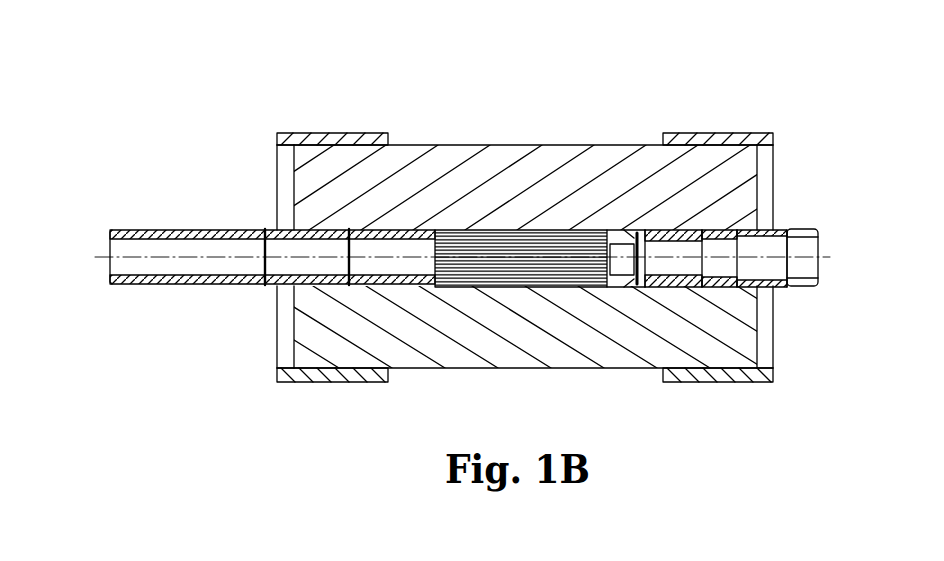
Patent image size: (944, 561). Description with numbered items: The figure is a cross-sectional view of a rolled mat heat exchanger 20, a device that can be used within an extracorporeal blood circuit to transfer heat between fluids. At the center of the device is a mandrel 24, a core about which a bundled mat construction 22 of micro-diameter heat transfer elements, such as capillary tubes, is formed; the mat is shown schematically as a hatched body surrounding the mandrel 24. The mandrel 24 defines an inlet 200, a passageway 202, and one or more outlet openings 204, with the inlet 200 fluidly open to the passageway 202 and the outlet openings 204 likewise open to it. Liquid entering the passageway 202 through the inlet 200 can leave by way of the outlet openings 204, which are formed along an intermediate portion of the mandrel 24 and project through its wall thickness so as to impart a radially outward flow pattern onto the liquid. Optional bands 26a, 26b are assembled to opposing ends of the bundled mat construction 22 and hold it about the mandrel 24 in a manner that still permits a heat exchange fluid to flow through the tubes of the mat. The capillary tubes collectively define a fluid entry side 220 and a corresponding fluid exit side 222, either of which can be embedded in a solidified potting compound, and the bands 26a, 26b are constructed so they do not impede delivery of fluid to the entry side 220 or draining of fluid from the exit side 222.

The rolled mat heat exchanger 20 is at (467, 93).
The bundled mat construction 22 is at (553, 170).
The mandrel 24 is at (233, 228).
The band 26a is at (710, 128).
The band 26b is at (328, 127).
The inlet 200 is at (114, 228).
The passageway 202 is at (212, 273).
The outlet openings 204 is at (560, 272).
The fluid entry side 220 is at (771, 184).
The fluid exit side 222 is at (294, 176).